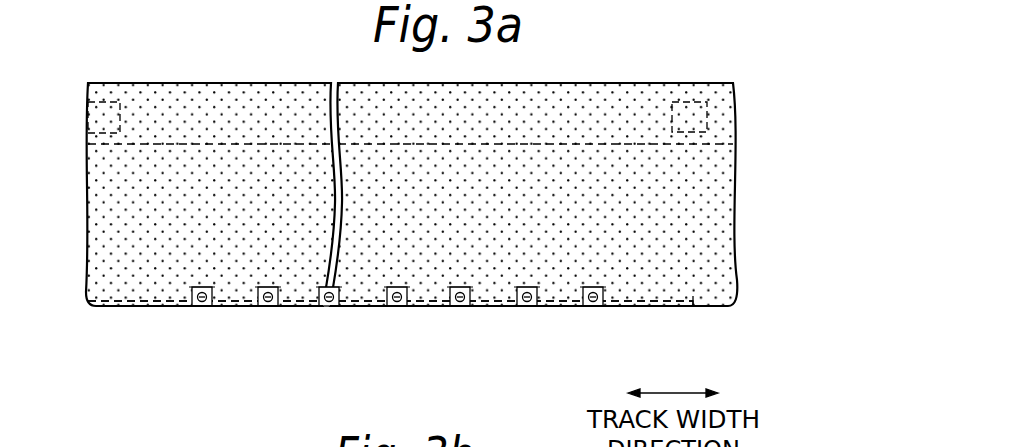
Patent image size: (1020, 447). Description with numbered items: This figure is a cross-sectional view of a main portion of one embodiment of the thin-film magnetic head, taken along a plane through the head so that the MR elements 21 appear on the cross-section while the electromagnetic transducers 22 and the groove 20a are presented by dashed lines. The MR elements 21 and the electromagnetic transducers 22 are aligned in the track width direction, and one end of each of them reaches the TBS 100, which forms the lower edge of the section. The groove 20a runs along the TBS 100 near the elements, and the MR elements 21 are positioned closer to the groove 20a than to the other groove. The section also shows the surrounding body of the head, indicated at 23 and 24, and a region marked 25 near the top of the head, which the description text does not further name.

The TBS 100 is at (642, 307).
The groove 20a is at (690, 300).
The MR element 21 is at (192, 291).
The electromagnetic transducer 22 is at (212, 305).
The substrate 23 is at (703, 212).
The overcoat layer 24 is at (710, 159).
The electrode pad 25 is at (688, 104).